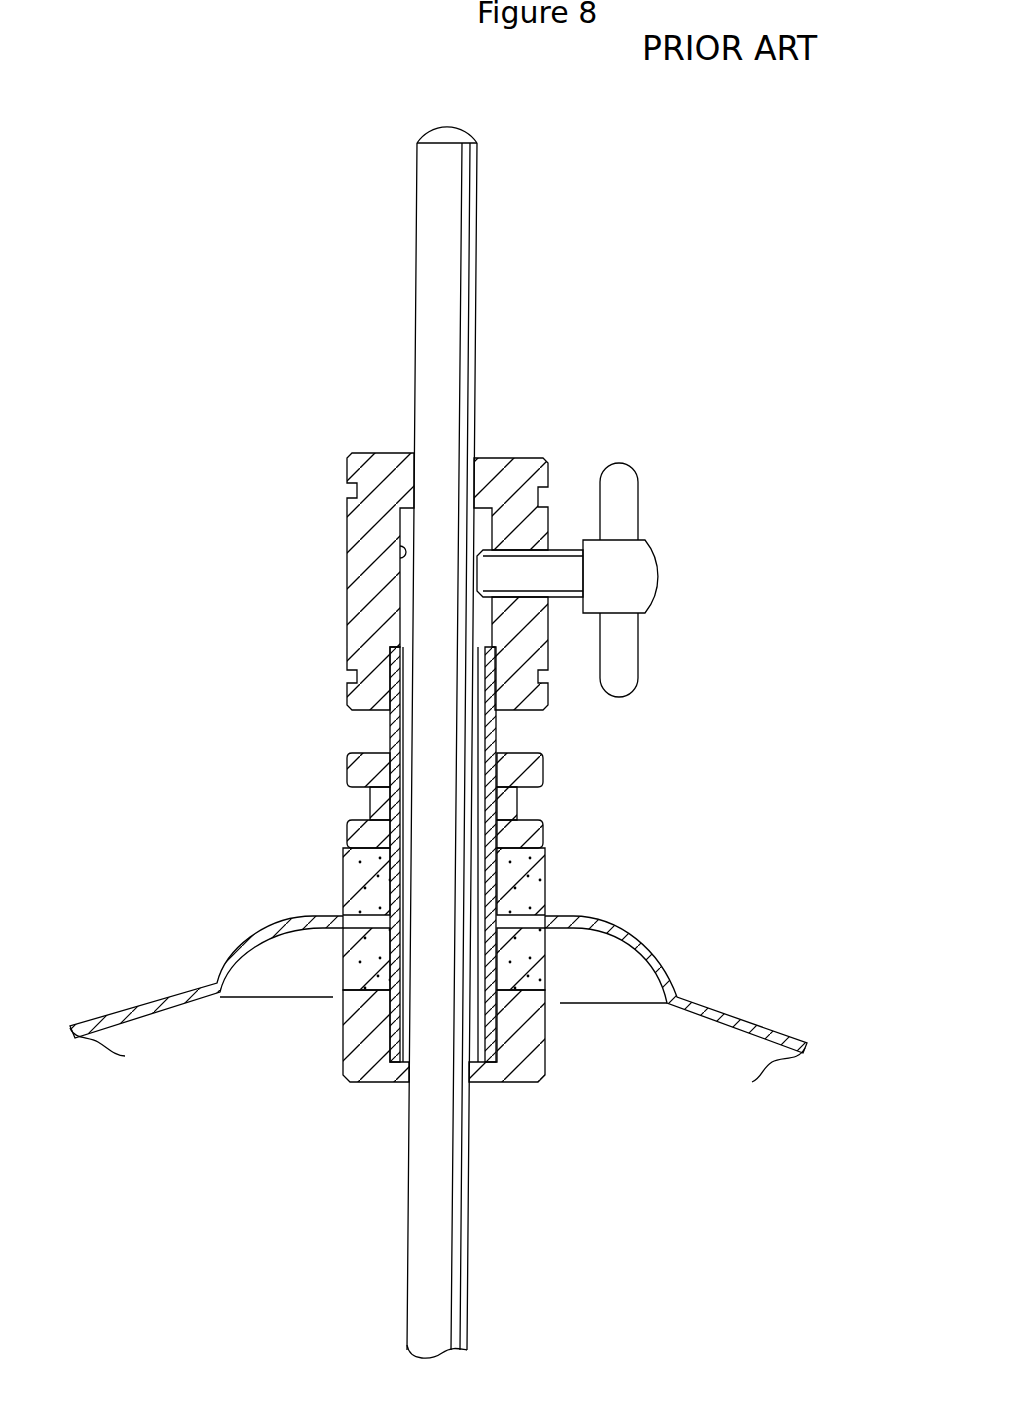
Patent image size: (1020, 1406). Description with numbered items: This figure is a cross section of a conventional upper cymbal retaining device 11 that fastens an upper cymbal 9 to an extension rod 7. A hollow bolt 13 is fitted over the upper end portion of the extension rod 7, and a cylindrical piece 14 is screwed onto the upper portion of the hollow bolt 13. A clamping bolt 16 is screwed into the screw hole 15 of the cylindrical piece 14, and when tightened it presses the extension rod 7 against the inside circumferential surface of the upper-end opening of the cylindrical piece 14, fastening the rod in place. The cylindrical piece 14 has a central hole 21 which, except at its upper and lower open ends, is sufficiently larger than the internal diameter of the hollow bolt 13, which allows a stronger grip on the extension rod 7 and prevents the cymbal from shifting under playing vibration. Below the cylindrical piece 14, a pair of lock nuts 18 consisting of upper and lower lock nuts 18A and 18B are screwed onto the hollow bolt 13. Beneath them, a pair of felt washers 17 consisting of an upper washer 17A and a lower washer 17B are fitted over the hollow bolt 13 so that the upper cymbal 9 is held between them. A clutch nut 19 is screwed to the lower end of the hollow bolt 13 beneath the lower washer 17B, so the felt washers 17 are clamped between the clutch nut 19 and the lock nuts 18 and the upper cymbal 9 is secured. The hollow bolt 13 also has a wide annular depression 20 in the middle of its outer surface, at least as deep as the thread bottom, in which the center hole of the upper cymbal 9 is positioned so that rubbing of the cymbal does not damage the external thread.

The extension rod 7 is at (467, 175).
The upper cymbal 9 is at (752, 1020).
The upper cymbal retaining device 11 is at (815, 525).
The hollow bolt 13 is at (512, 737).
The cylindrical piece 14 is at (515, 467).
The screw hole 15 is at (563, 547).
The clamping bolt 16 is at (635, 588).
The felt washers 17 is at (645, 835).
The upper washer 17A is at (545, 890).
The lower washer 17B is at (548, 958).
The lock nuts 18 is at (191, 731).
The upper lock nut 18A is at (350, 767).
The lower lock nut 18B is at (350, 830).
The clutch nut 19 is at (347, 1063).
The annular depression 20 is at (340, 983).
The central hole 21 is at (400, 552).